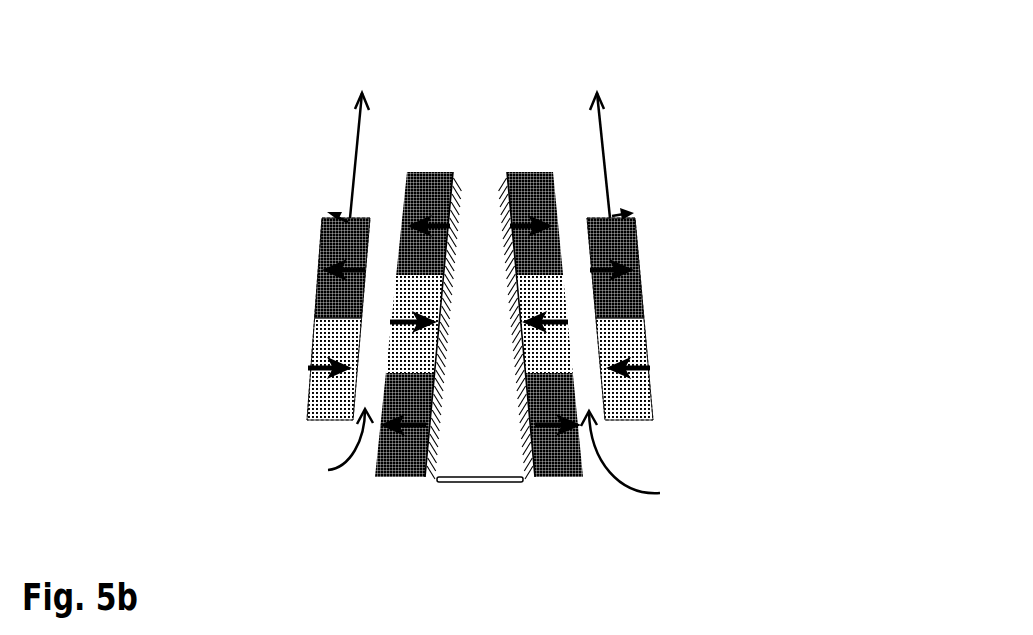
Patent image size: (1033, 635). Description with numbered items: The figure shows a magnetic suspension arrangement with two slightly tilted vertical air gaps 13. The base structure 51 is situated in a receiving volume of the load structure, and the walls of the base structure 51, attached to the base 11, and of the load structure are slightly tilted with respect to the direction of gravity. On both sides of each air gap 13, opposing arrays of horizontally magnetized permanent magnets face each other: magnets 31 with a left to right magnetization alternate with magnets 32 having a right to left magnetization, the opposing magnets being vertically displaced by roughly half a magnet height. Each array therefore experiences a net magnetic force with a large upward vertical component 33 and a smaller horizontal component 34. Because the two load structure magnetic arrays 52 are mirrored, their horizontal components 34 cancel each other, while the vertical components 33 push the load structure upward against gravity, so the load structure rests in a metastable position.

The base structure 11 is at (480, 483).
The vertical airgap 13 is at (491, 463).
The permanent magnet 31 is at (322, 242).
The permanent magnet 32 is at (316, 356).
The vertical component of net magnetic force 33 is at (603, 135).
The horizontal component of net magnetic force 34 is at (612, 214).
The base structure 51 is at (440, 153).
The load structure magnetic arrays 52 is at (290, 421).